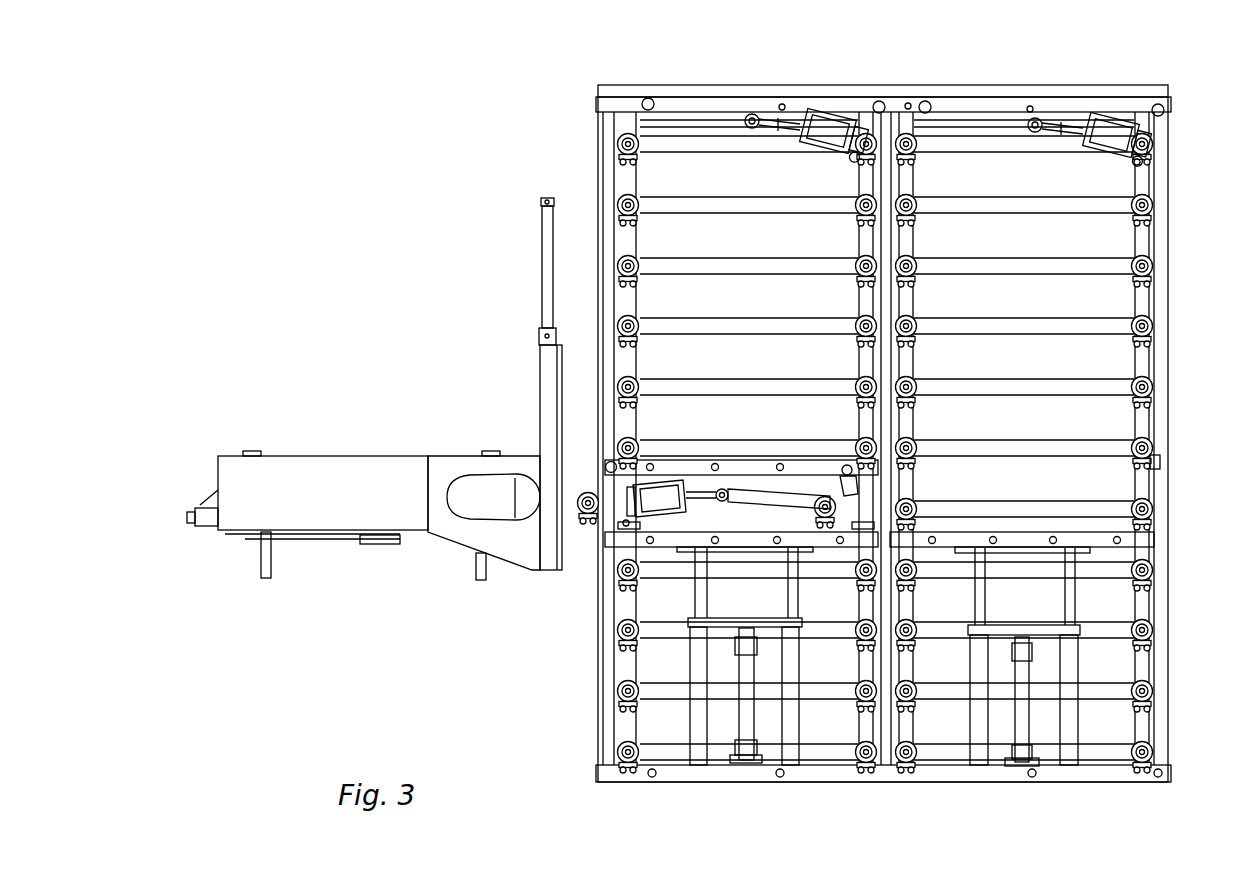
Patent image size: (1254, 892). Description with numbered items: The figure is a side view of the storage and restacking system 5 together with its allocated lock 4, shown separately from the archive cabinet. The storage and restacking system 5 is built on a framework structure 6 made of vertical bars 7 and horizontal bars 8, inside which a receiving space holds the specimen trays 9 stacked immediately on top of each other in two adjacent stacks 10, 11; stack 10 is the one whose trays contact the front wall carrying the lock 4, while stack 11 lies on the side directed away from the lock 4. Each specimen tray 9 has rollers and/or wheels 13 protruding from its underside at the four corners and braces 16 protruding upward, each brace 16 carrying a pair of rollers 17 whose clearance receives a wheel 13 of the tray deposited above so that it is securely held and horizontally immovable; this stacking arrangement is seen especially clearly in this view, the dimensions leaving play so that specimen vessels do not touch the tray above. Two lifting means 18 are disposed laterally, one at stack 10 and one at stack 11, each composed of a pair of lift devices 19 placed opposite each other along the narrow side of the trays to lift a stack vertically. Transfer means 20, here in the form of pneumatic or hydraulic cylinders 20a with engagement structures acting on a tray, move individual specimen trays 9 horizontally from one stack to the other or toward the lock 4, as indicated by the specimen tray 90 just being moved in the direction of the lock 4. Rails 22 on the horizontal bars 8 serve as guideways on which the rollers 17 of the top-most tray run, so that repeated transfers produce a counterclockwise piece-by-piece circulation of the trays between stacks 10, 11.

The lock 4 is at (260, 435).
The storage and restacking system 5 is at (568, 155).
The framework structure 6 is at (1164, 195).
The vertical bars 7 is at (887, 130).
The horizontal bars 8 is at (960, 778).
The specimen trays 9 is at (738, 145).
The stack 10 is at (668, 185).
The stack 11 is at (993, 195).
The rollers and/or wheels 13 is at (634, 136).
The braces 16 is at (605, 468).
The rollers 17 is at (1160, 464).
The lifting means 18 is at (693, 717).
The lift devices 19 is at (738, 720).
The transfer means 20 is at (822, 120).
The pneumatic or hydraulic cylinders 20a is at (800, 130).
The rails 22 is at (706, 107).
The specimen tray 90 is at (624, 525).